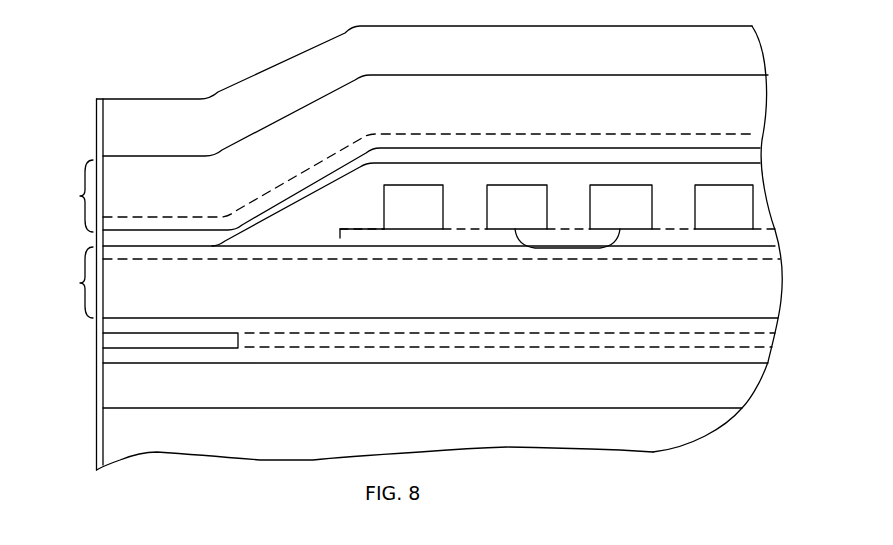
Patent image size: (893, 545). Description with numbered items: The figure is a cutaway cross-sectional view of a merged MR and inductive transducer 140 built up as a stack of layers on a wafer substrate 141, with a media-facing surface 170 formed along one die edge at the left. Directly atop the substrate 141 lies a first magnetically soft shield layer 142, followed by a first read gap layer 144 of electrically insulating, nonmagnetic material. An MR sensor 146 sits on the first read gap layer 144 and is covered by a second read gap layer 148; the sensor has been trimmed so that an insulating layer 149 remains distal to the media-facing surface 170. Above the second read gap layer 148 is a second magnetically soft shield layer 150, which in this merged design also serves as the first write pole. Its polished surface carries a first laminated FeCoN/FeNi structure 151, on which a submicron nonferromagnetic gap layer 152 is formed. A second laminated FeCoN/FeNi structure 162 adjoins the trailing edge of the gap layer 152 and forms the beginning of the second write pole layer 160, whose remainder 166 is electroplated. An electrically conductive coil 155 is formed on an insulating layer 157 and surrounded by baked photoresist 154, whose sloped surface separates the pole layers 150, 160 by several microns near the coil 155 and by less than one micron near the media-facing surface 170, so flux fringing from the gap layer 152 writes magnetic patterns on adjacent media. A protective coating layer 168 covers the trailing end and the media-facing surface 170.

The merged MR and inductive transducer 140 is at (100, 56).
The wafer substrate 141 is at (397, 447).
The first magnetically soft shield layer 142 is at (266, 398).
The first read gap layer 144 is at (473, 357).
The MR sensor 146 is at (150, 343).
The second read gap layer 148 is at (683, 333).
The insulating layer 149 is at (572, 346).
The second magnetically soft shield layer 150 is at (409, 282).
The first laminated FeCoN/FeNi structure 151 is at (323, 263).
The nonferromagnetic gap layer 152 is at (206, 247).
The baked photoresist 154 is at (366, 215).
The electrically conductive coil 155 is at (567, 248).
The insulating layer 157 is at (674, 226).
The second write pole layer 160 is at (67, 196).
The second laminated FeCoN/FeNi structure 162 is at (180, 213).
The remainder of pole layer 166 is at (554, 116).
The protective coating layer 168 is at (554, 61).
The media-facing surface 170 is at (85, 419).